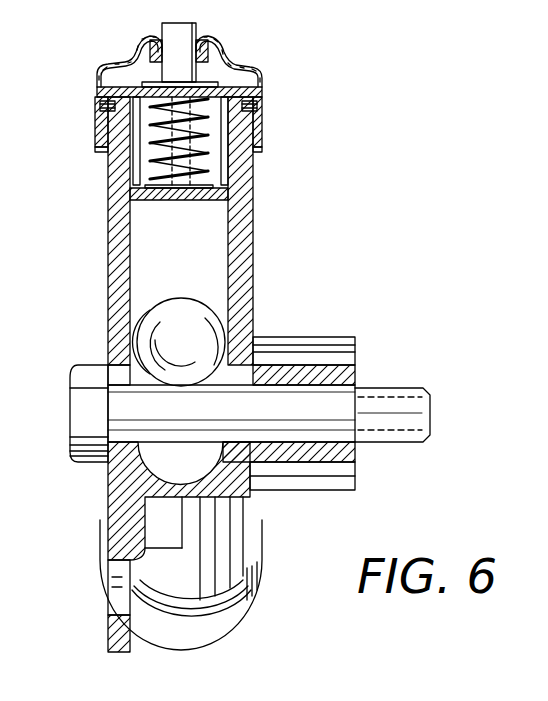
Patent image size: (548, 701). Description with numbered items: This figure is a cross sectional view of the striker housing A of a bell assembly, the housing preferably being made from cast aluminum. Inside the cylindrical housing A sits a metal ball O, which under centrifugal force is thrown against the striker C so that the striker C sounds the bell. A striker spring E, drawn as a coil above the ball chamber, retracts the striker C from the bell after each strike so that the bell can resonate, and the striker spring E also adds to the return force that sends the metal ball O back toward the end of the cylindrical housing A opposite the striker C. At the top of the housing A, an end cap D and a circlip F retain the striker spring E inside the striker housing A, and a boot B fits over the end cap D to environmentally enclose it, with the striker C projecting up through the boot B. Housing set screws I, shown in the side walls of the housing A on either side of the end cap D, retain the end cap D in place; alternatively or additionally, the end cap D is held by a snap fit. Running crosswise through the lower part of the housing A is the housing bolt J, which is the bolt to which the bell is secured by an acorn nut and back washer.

The striker housing A is at (248, 248).
The boot B is at (247, 67).
The striker C is at (192, 28).
The end cap D is at (190, 125).
The striker spring E is at (157, 173).
The circlip F is at (148, 77).
The housing set screw I is at (257, 110).
The housing bolt J is at (430, 410).
The metal ball O is at (205, 332).